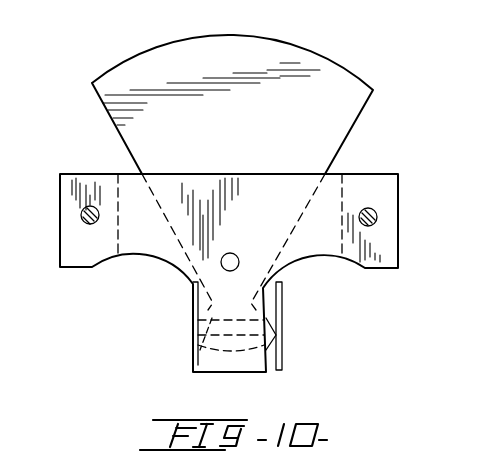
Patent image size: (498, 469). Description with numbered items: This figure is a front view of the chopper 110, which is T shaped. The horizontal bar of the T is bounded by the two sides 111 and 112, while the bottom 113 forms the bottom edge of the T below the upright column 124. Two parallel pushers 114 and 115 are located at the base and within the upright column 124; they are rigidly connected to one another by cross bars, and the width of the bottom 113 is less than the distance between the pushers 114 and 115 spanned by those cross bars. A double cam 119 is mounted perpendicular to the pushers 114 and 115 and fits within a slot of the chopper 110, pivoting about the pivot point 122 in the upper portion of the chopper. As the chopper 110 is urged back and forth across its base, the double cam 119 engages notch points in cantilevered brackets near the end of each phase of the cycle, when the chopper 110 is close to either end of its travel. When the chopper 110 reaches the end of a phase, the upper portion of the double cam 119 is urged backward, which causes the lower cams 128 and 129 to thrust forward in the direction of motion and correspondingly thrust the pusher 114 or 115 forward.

The chopper 110 is at (402, 187).
The side 111 is at (395, 245).
The side 112 is at (60, 232).
The bottom 113 is at (240, 373).
The pusher 114 is at (283, 307).
The pusher 115 is at (194, 311).
The double cam 119 is at (312, 52).
The pivot point 122 is at (237, 255).
The upright column 124 is at (247, 311).
The lower cam 128 is at (197, 353).
The lower cam 129 is at (278, 350).